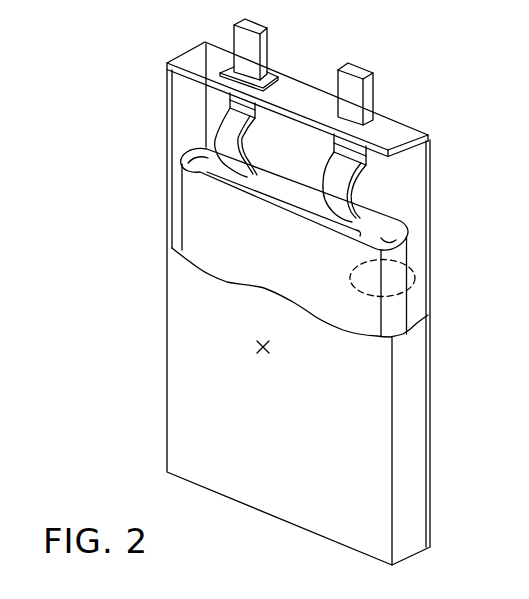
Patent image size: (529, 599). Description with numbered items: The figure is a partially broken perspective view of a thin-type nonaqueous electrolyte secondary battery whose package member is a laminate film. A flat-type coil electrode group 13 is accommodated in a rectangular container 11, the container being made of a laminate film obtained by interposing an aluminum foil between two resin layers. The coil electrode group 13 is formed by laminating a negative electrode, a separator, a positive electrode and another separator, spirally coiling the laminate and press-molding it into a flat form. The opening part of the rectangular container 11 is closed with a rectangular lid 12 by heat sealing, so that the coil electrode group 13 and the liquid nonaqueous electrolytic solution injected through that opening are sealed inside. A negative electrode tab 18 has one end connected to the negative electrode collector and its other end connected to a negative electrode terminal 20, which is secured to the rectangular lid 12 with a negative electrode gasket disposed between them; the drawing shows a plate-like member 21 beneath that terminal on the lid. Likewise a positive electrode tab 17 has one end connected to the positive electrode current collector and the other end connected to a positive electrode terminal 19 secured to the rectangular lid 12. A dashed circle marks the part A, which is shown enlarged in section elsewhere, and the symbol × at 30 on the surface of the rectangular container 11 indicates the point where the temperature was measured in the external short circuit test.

The rectangular container 11 is at (417, 417).
The rectangular lid 12 is at (385, 128).
The coil electrode group 13 is at (414, 249).
The positive electrode tab 17 is at (339, 192).
The negative electrode tab 18 is at (236, 144).
The positive electrode terminal 19 is at (372, 90).
The negative electrode terminal 20 is at (268, 43).
The insulating gasket 21 is at (276, 74).
The temperature measurement part 30 is at (257, 348).
The part A is at (415, 276).